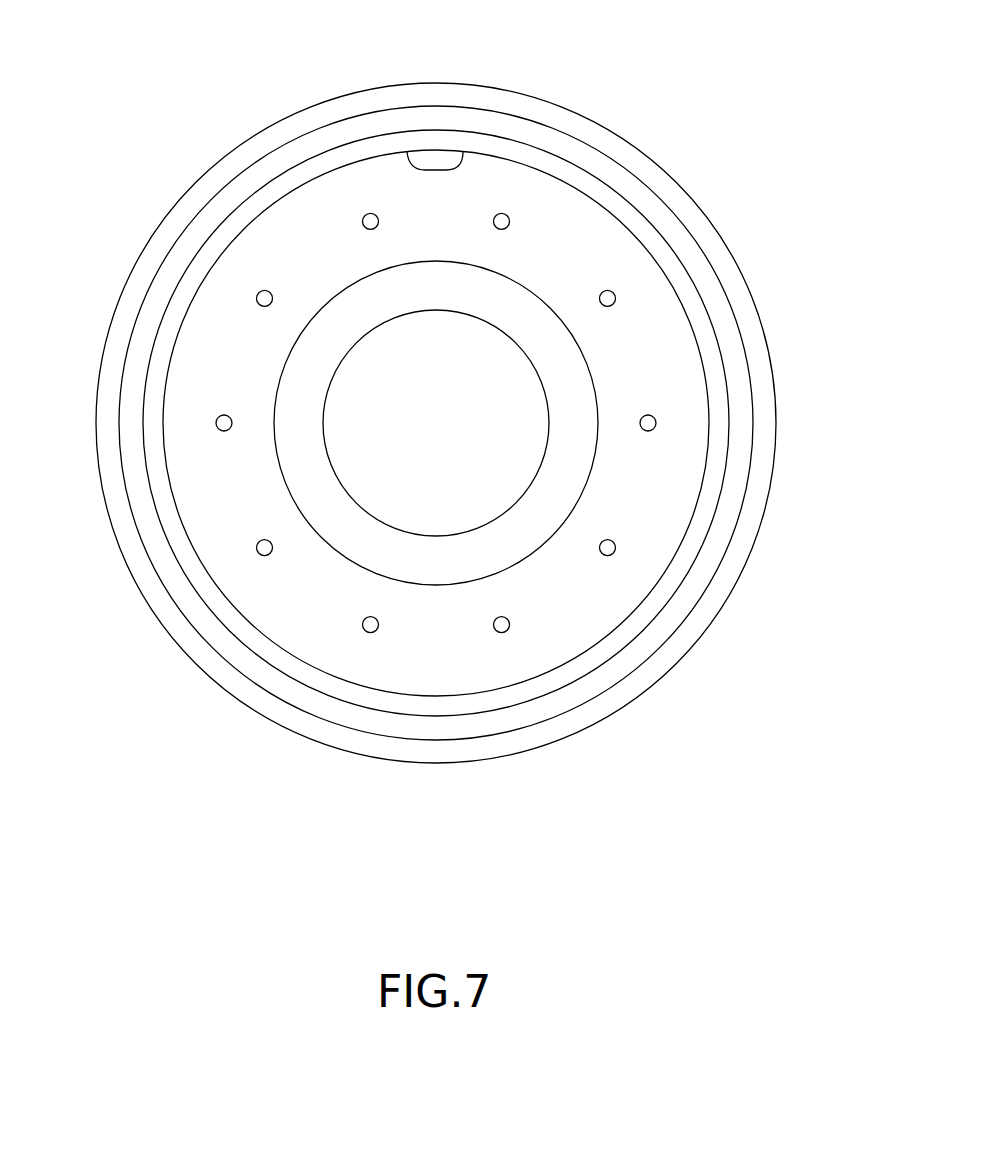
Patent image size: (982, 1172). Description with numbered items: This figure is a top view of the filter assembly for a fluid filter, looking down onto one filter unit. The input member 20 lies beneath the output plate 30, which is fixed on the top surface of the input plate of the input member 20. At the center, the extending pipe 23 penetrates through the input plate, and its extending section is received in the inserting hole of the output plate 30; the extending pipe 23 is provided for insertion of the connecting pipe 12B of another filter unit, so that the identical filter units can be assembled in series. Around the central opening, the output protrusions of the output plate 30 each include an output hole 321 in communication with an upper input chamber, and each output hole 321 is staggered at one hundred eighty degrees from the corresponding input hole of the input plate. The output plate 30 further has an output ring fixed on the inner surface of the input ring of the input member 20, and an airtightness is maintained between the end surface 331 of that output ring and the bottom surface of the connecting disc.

The input member 20 is at (568, 107).
The extending pipe 23 is at (516, 305).
The output plate 30 is at (643, 212).
The end surface 331 is at (692, 305).
The output hole 321 is at (653, 418).
The connecting pipe 12B is at (345, 407).